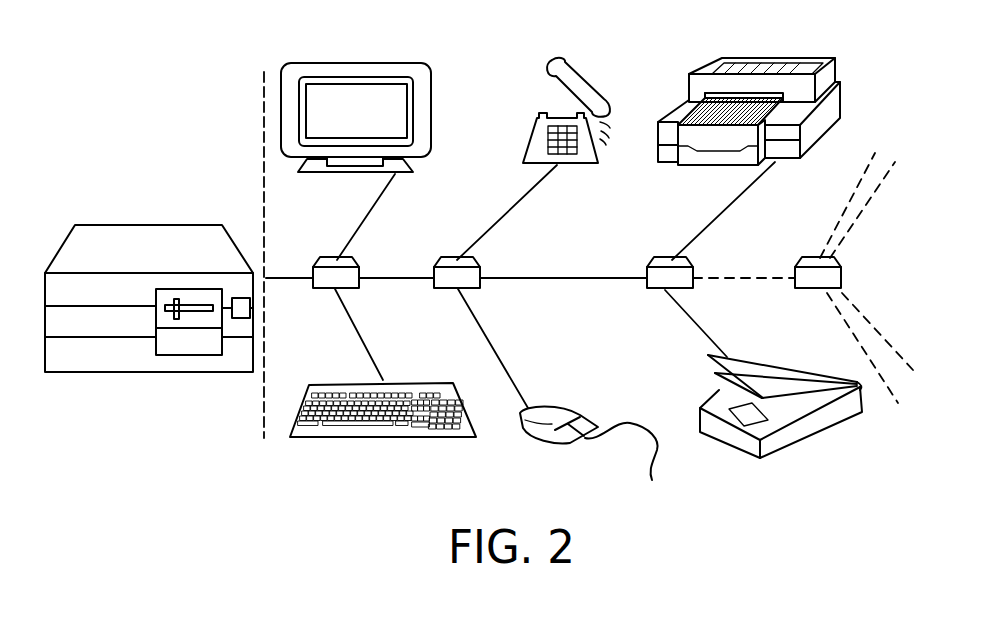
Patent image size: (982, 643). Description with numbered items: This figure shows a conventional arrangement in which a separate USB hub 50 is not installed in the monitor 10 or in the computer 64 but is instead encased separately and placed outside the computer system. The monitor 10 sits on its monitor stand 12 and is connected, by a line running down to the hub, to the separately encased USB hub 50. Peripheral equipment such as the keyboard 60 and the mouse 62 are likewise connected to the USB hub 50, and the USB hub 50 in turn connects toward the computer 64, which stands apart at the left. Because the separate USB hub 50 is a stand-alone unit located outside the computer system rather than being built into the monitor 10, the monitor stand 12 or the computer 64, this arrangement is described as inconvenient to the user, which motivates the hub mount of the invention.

The monitor 10 is at (350, 70).
The monitor stand 12 is at (308, 162).
The USB hub 50 is at (652, 263).
The keyboard 60 is at (380, 432).
The mouse 62 is at (545, 430).
The computer 64 is at (145, 362).